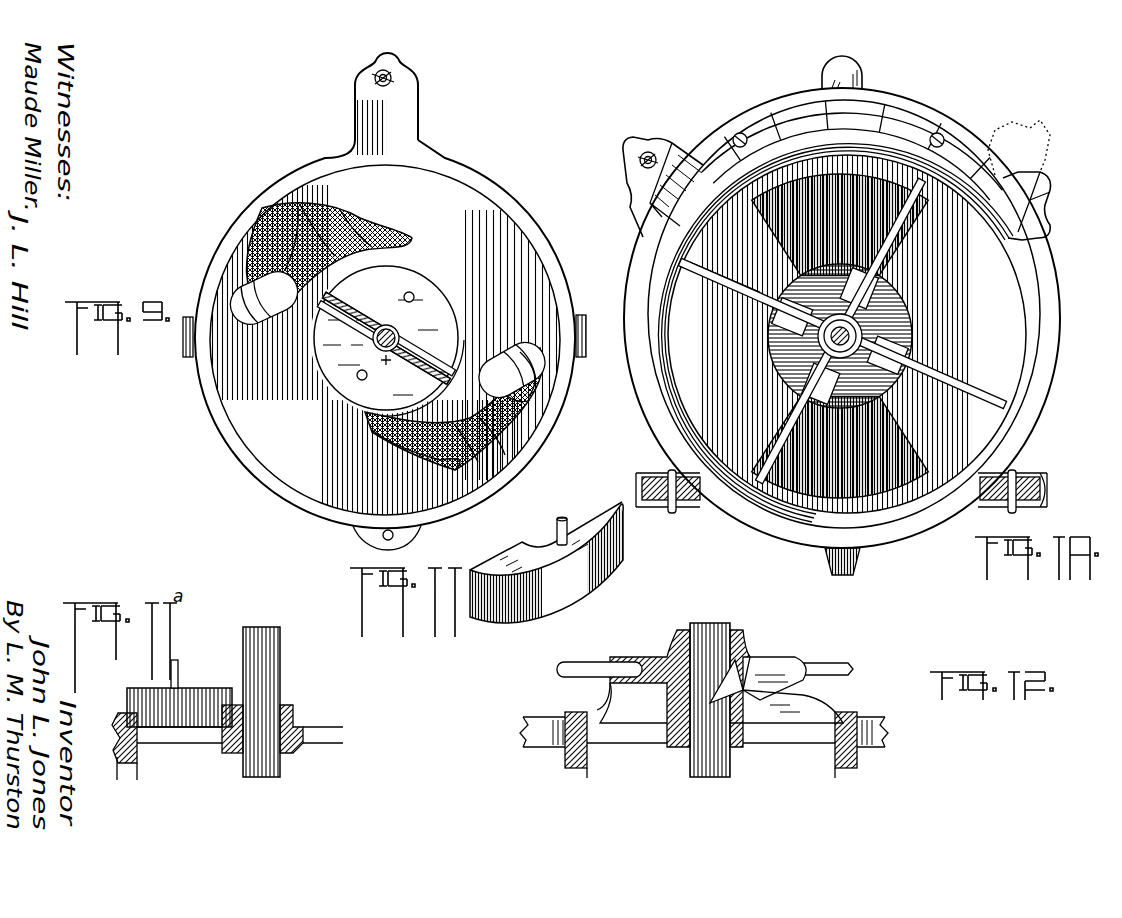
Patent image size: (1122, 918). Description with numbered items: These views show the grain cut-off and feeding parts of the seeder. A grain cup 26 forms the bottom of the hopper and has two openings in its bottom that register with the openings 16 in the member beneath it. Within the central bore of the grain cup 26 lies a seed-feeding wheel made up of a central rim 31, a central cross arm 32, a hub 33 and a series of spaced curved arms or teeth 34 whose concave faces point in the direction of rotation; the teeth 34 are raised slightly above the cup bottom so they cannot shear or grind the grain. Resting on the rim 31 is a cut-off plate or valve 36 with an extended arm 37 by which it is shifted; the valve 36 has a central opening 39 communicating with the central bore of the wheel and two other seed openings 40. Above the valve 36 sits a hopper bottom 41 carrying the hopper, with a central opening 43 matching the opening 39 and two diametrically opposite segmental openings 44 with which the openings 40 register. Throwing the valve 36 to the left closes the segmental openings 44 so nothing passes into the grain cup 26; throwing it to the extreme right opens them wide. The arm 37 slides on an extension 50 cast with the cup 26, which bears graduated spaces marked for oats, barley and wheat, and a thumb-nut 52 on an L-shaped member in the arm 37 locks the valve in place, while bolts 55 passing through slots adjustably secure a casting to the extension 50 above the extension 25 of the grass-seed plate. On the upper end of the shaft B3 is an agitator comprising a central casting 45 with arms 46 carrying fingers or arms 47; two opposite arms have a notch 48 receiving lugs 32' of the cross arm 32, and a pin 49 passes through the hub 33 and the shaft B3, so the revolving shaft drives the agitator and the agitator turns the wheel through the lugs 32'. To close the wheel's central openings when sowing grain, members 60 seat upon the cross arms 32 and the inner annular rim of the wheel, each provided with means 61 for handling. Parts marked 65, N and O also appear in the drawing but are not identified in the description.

In FIG. 9, the openings 16 is at (545, 348).
In FIG. 10, the extension 25 is at (866, 78).
In FIG. 9, the grain cup 26 is at (480, 447).
In FIG. 11a, the central rim 31 is at (140, 770).
In FIG. 12, the central rim 31 is at (589, 765).
In FIG. 9, the central cross arm 32 is at (386, 315).
In FIG. 11a, the central cross arm 32 is at (245, 764).
In FIG. 12, the central cross arm 32 is at (711, 756).
In FIG. 9, the lugs 32' is at (464, 301).
In FIG. 12, the lugs 32' is at (720, 690).
In FIG. 9, the hub 33 is at (388, 353).
In FIG. 11a, the hub 33 is at (296, 707).
In FIG. 12, the hub 33 is at (684, 628).
In FIG. 9, the curved arms or teeth 34 is at (532, 384).
In FIG. 12, the curved arms or teeth 34 is at (704, 745).
In FIG. 9, the cut-off plate or valve 36 is at (385, 345).
In FIG. 10, the cut-off plate or valve 36 is at (888, 455).
In FIG. 9, the extended arm 37 is at (422, 100).
In FIG. 10, the extended arm 37 is at (640, 173).
In FIG. 9, the central opening 39 is at (310, 340).
In FIG. 9, the seed openings 40 is at (247, 242).
In FIG. 10, the hopper bottom 41 is at (1064, 353).
In FIG. 10, the central opening 43 is at (908, 320).
In FIG. 10, the segmental openings 44 is at (912, 238).
In FIG. 10, the central casting 45 is at (772, 356).
In FIG. 10, the arms 46 is at (900, 354).
In FIG. 10, the fingers or arms 47 is at (1000, 408).
In FIG. 12, the notch 48 is at (612, 680).
In FIG. 10, the pin 49 is at (768, 318).
In FIG. 10, the extension 50 is at (1048, 185).
In FIG. 9, the thumb-nut 52 is at (393, 77).
In FIG. 10, the thumb-nut 52 is at (650, 150).
In FIG. 10, the bolts 55 is at (946, 134).
In FIG. 9, the closure members 60 is at (298, 371).
In FIG. 11, the closure members 60 is at (547, 562).
In FIG. 11a, the closure members 60 is at (197, 686).
In FIG. 9, the handling means 61 is at (413, 294).
In FIG. 11, the handling means 61 is at (555, 531).
In FIG. 11a, the handling means 61 is at (180, 659).
In FIG. 9, the side lug 65 is at (587, 320).
In FIG. 10, the shaft B3 is at (776, 373).
In FIG. 11a, the shaft B3 is at (283, 666).
In FIG. 12, the shaft B3 is at (725, 625).
In FIG. 10, the bracket N is at (694, 510).
In FIG. 10, the foot O is at (665, 503).